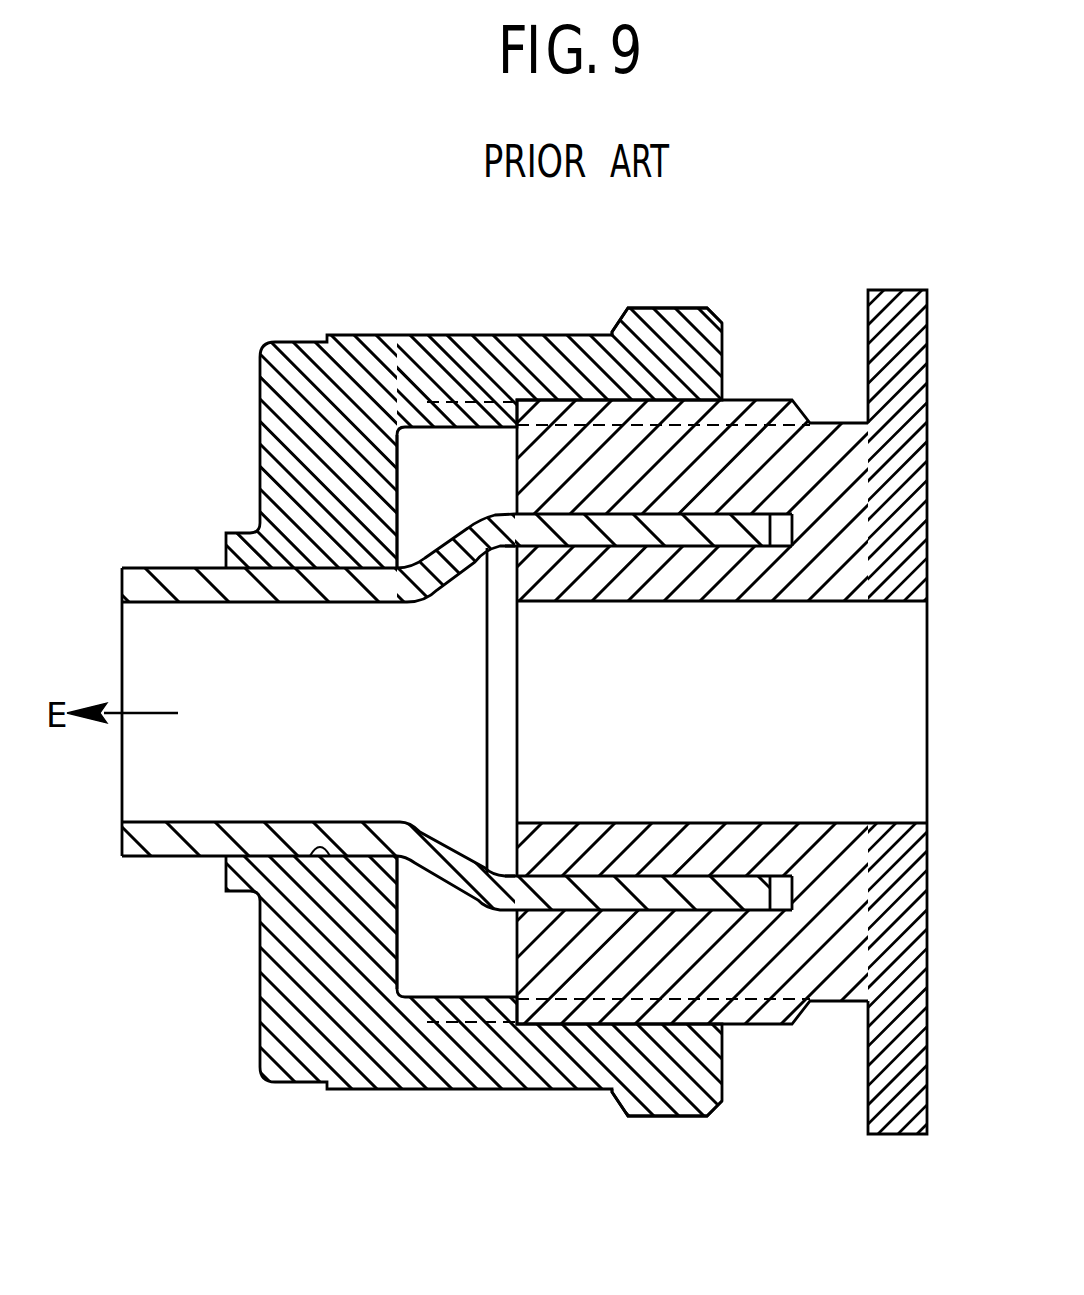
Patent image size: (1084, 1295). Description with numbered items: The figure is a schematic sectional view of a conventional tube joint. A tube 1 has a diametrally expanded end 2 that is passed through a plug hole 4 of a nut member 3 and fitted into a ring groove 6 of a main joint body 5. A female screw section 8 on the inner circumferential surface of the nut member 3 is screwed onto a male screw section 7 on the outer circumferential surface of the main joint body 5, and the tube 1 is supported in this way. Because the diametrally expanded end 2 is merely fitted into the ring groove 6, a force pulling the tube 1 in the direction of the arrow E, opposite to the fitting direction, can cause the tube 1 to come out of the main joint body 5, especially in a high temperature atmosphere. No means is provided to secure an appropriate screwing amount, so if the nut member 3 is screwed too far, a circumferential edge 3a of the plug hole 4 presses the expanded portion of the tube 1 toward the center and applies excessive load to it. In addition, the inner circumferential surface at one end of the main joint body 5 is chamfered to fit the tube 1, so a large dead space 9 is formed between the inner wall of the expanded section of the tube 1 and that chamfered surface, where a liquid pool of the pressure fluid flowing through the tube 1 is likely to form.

The tube 1 is at (166, 845).
The diametrally expanded end 2 is at (727, 533).
The nut member 3 is at (450, 1094).
The circumferential edge 3a is at (393, 562).
The plug hole 4 is at (328, 857).
The main joint body 5 is at (772, 1026).
The ring groove 6 is at (645, 888).
The male screw section 7 is at (653, 382).
The female screw section 8 is at (646, 1010).
The dead space 9 is at (478, 568).